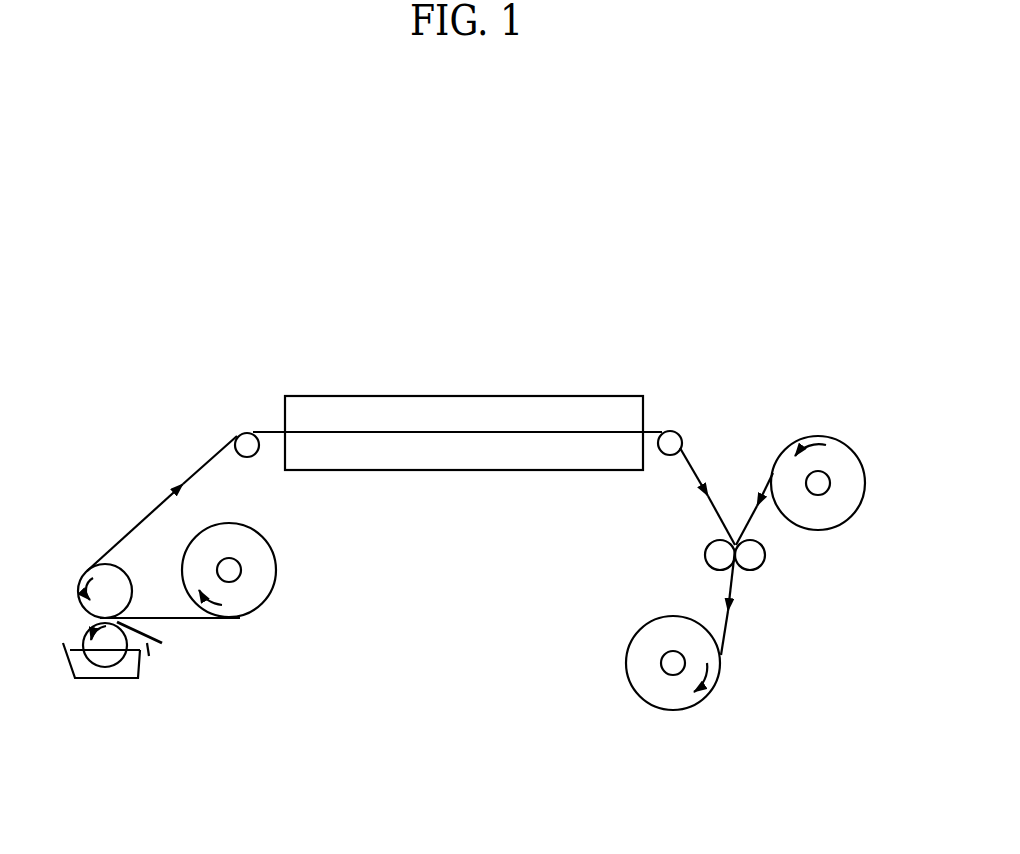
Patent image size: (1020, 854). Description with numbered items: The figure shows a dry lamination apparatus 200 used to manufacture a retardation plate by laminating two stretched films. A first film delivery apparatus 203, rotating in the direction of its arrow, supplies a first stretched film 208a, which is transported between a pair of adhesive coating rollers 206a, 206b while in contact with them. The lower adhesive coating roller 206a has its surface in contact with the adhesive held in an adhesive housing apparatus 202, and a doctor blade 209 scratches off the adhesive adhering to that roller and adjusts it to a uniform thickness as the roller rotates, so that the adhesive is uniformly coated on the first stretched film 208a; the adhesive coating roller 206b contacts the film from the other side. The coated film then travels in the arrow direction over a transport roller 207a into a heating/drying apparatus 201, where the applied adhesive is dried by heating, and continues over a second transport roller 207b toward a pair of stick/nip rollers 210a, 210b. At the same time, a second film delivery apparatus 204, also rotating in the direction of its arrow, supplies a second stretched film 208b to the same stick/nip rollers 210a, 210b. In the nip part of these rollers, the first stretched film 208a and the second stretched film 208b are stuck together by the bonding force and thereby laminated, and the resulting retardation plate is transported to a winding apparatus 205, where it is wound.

The dry lamination apparatus 200 is at (484, 288).
The heating/drying apparatus 201 is at (528, 396).
The adhesive housing apparatus 202 is at (130, 680).
The first film delivery apparatus 203 is at (277, 578).
The second film delivery apparatus 204 is at (847, 440).
The winding apparatus 205 is at (685, 712).
The adhesive coating roller 206a is at (102, 680).
The adhesive coating roller 206b is at (130, 572).
The transport roller 207a is at (240, 433).
The transport roller 207b is at (675, 431).
The first stretched film 208a is at (140, 511).
The second stretched film 208b is at (755, 520).
The doctor blade 209 is at (148, 653).
The stick/nip roller 210a is at (763, 570).
The stick/nip roller 210b is at (705, 548).